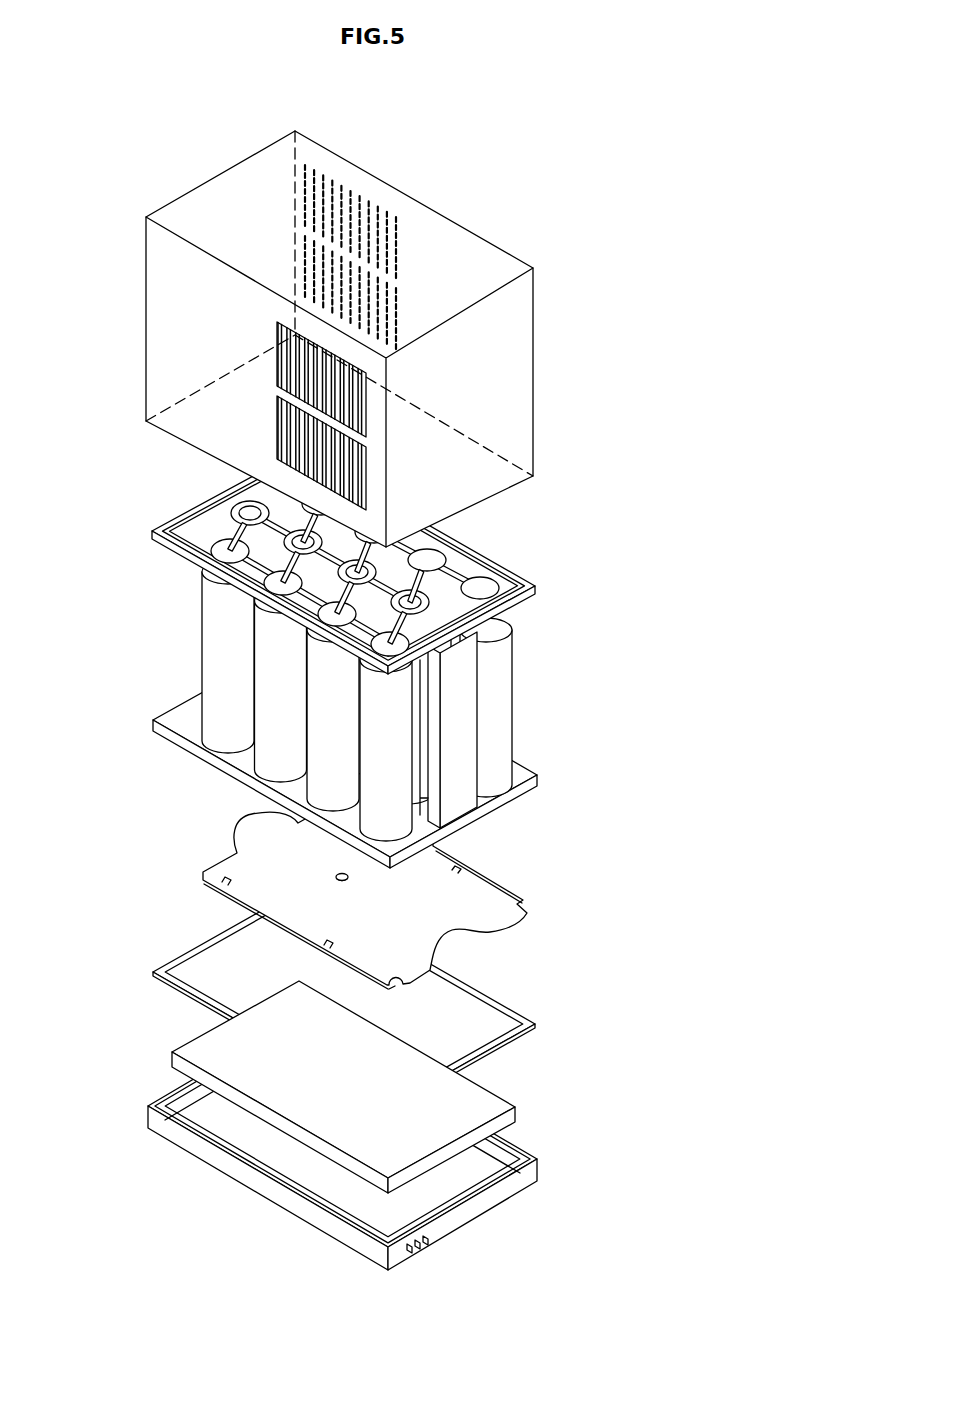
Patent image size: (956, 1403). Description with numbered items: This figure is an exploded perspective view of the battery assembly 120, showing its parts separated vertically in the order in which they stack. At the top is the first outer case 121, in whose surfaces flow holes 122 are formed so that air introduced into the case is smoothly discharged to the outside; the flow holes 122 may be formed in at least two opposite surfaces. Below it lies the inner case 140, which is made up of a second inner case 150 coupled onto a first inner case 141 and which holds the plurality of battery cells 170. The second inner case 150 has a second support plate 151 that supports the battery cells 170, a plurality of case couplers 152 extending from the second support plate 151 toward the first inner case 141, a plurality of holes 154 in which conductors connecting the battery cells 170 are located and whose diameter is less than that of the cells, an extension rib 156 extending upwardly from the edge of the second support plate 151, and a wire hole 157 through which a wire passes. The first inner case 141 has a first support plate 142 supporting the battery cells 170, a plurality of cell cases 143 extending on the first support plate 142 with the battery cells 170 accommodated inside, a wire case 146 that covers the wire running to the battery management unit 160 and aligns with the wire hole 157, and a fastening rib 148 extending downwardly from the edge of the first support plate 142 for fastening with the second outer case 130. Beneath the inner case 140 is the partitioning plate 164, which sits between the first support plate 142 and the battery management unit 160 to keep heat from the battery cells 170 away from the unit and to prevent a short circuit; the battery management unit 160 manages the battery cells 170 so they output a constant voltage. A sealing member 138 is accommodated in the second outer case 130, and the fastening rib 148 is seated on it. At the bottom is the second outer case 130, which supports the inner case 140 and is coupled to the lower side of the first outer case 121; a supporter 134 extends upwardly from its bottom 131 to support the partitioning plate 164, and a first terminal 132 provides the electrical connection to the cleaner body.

The battery assembly 120 is at (342, 310).
The first outer case 121 is at (526, 377).
The flow holes 122 is at (277, 354).
The second outer case 130 is at (380, 1144).
The bottom 131 is at (473, 1178).
The first terminal 132 is at (430, 1238).
The supporter 134 is at (510, 1165).
The sealing member 138 is at (532, 1023).
The inner case 140 is at (378, 646).
The first inner case 141 is at (356, 682).
The first support plate 142 is at (343, 753).
The cell cases 143 is at (213, 660).
The wire case 146 is at (467, 748).
The fastening rib 148 is at (155, 727).
The second inner case 150 is at (351, 562).
The second support plate 151 is at (207, 525).
The case couplers 152 is at (212, 584).
The holes 154 is at (503, 562).
The extension rib 156 is at (160, 521).
The wire hole 157 is at (528, 602).
The battery management unit 160 is at (500, 1098).
The partitioning plate 164 is at (525, 903).
The battery cells 170 is at (330, 616).